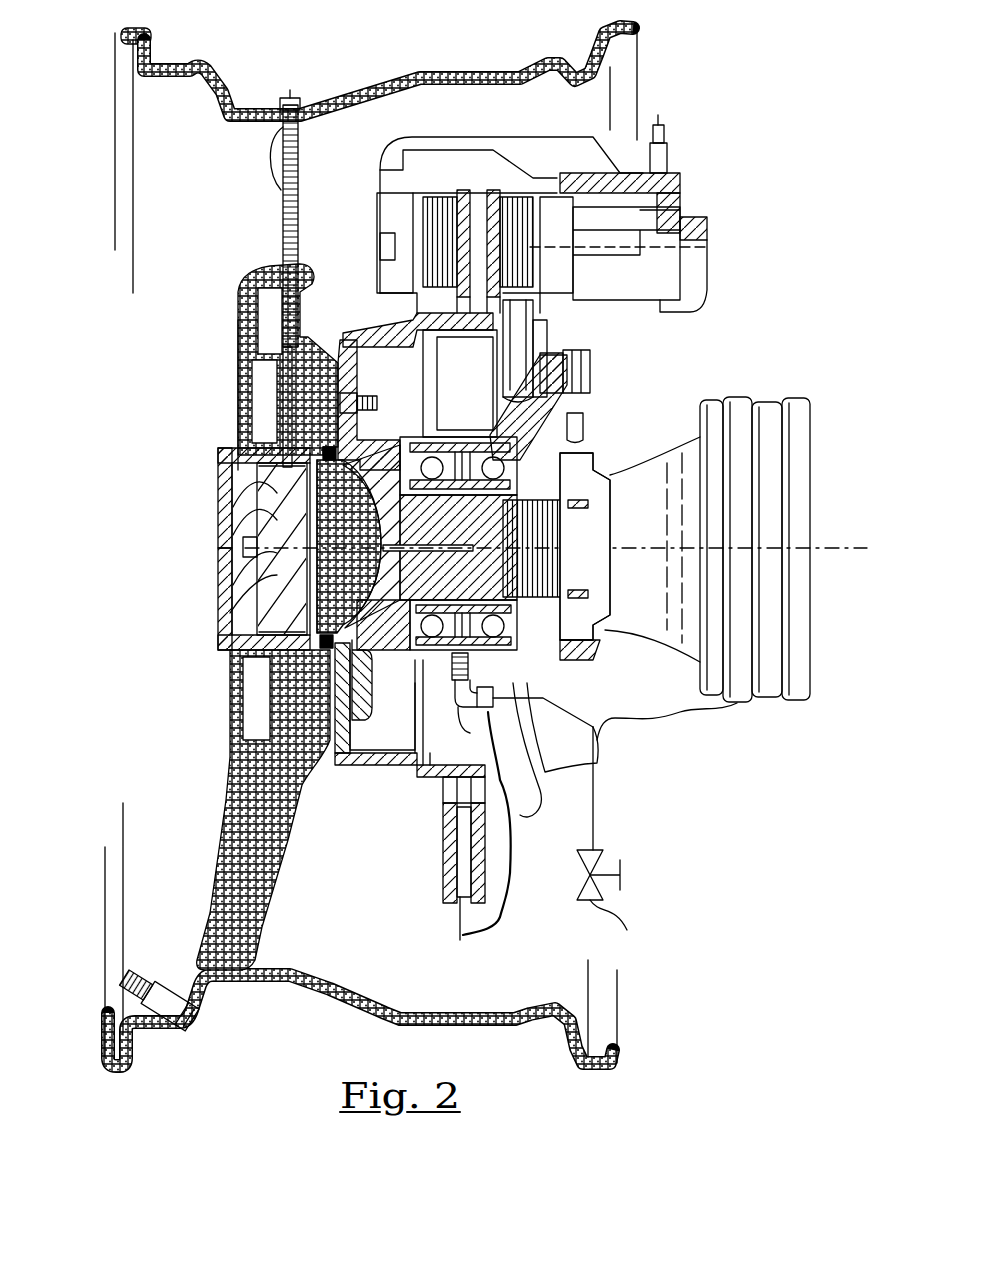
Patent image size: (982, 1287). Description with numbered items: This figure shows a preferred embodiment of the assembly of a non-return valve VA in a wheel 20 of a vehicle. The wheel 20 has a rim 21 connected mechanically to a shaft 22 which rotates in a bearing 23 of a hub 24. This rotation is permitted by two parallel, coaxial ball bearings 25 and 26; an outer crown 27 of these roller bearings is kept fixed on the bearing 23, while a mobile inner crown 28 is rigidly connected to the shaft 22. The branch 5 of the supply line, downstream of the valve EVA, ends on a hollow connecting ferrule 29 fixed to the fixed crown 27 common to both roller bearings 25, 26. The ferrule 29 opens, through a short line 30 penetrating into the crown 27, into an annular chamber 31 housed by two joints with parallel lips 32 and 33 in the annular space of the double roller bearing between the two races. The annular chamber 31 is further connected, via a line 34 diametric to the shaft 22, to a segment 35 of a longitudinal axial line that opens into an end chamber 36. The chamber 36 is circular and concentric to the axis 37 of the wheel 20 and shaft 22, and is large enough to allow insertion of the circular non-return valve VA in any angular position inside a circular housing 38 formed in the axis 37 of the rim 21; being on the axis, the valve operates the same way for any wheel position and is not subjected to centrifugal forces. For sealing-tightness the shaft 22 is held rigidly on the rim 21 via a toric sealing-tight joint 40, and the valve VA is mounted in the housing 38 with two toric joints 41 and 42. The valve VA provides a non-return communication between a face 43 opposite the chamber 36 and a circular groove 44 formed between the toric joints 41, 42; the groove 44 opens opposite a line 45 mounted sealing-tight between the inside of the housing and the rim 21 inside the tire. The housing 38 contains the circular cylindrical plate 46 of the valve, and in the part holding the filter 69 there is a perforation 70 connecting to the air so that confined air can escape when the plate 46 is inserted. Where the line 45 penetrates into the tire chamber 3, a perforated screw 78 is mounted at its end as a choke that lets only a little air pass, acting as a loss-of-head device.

The chamber 3 is at (450, 44).
The branch 5 is at (597, 777).
The wheel 20 is at (160, 185).
The rim 21 is at (212, 75).
The shaft 22 is at (633, 527).
The bearing 23 is at (563, 380).
The hub 24 is at (593, 447).
The ball bearing 25 is at (385, 480).
The ball bearing 26 is at (480, 440).
The outer crown 27 is at (440, 660).
The inner crown 28 is at (423, 513).
The hollow connecting ferrule 29 is at (467, 707).
The short line 30 is at (527, 687).
The annular chamber 31 is at (500, 590).
The joint with parallel lips 32 is at (460, 600).
The joint with parallel lips 33 is at (540, 663).
The line 34 is at (560, 417).
The segment 35 is at (349, 546).
The end chamber 36 is at (332, 547).
The axis 37 is at (237, 530).
The circular housing 38 is at (223, 633).
The toric sealing-tight joint 40 is at (355, 685).
The toric joint 41 is at (223, 645).
The toric joint 42 is at (243, 657).
The face 43 is at (237, 583).
The circular groove 44 is at (223, 463).
The line 45 is at (303, 332).
The circular cylindrical plate 46 is at (230, 613).
The filter 69 is at (247, 548).
The perforation 70 is at (243, 430).
The perforated screw 78 is at (297, 100).
The non-return valve VA is at (240, 483).
The valve EVA is at (625, 949).